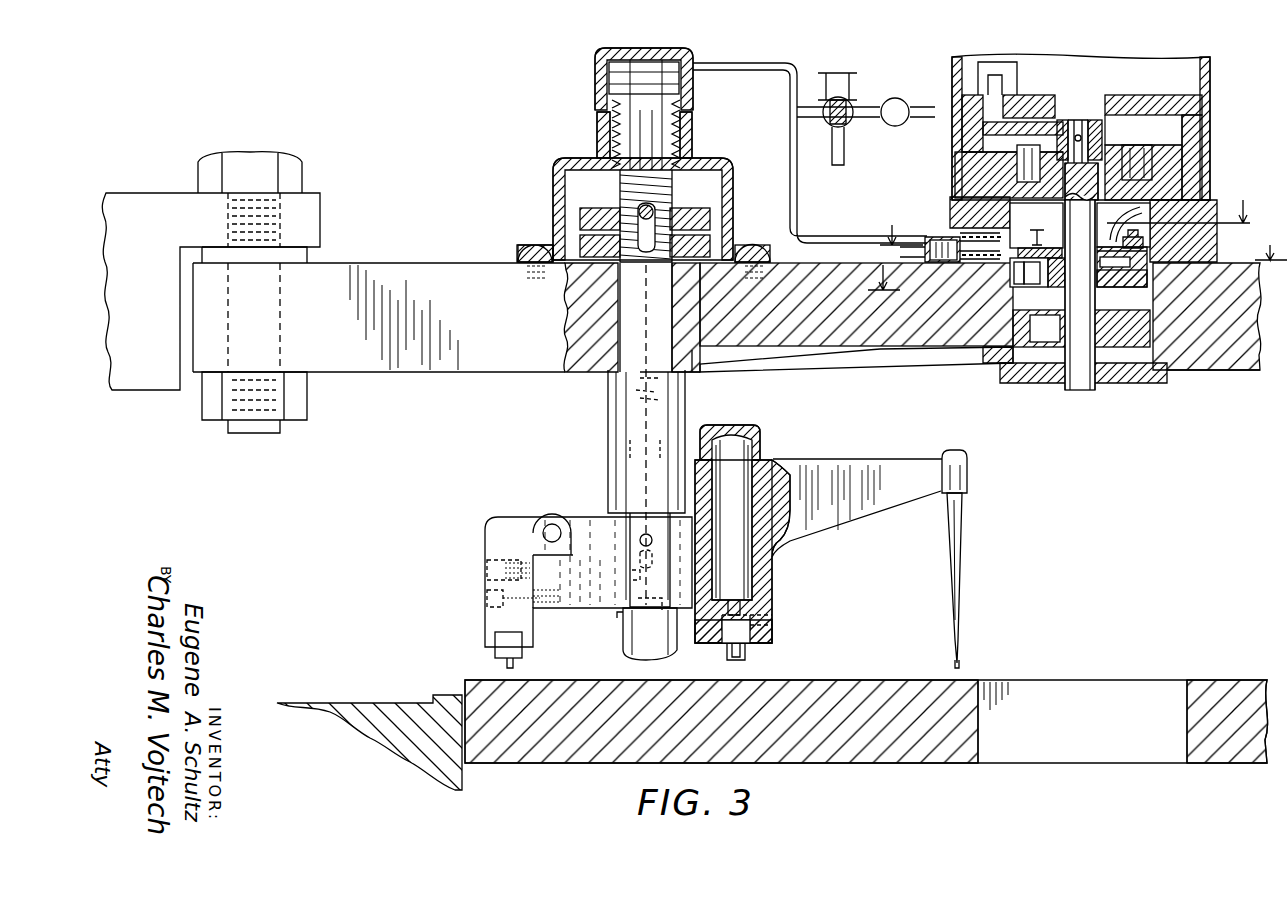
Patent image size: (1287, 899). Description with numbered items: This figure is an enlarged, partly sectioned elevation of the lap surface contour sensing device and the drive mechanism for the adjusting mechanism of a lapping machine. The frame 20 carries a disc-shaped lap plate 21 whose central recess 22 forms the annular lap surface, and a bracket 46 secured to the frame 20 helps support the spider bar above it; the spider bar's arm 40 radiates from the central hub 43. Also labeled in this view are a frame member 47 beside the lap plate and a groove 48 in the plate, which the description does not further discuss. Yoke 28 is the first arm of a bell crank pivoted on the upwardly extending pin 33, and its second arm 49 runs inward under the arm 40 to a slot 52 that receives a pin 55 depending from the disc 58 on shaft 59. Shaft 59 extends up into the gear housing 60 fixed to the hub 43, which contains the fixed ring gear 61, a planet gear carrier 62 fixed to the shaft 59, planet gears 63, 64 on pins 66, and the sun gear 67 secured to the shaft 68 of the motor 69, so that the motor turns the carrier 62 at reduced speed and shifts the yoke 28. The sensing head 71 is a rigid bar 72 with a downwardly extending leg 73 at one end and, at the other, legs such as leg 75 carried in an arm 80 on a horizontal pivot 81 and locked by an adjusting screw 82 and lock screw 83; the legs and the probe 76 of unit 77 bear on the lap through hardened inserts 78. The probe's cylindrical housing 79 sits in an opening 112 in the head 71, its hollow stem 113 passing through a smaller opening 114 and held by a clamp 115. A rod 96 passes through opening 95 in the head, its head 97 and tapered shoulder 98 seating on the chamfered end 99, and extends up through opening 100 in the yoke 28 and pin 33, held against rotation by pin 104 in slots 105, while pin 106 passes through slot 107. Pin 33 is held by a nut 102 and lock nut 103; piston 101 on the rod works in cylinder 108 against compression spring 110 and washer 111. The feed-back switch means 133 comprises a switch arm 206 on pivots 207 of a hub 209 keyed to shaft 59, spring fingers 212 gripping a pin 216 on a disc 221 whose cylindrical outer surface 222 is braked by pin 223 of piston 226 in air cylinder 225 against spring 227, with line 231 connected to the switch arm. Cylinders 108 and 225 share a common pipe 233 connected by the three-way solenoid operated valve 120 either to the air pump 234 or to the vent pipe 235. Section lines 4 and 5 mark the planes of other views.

The frame 20 is at (150, 378).
The lap plate 21 is at (557, 773).
The central recess 22 is at (1015, 715).
The yoke 28 is at (608, 414).
The pin 33 is at (635, 305).
The arm 40 is at (392, 365).
The hub 43 is at (948, 230).
The bracket 46 is at (302, 185).
The frame member 47 is at (462, 690).
The groove 48 is at (988, 680).
The second arm 49 is at (864, 370).
The slot 52 is at (1035, 383).
The pin 55 is at (998, 365).
The disc 58 is at (1030, 336).
The shaft 59 is at (1085, 395).
The gear housing 60 is at (955, 162).
The ring gear 61 is at (1185, 168).
The planet gear carrier 62 is at (1000, 177).
The planet gear 63 is at (1045, 122).
The planet gear 64 is at (1190, 140).
The pin 66 is at (1028, 145).
The sun gear 67 is at (1105, 152).
The shaft 68 is at (1085, 120).
The motor 69 is at (1205, 73).
The head 71 is at (818, 455).
The bar 72 is at (832, 520).
The leg 73 is at (962, 568).
The leg 75 is at (516, 665).
The probe 76 is at (772, 650).
The unit 77 is at (775, 575).
The insert 78 is at (505, 666).
The cylindrical housing 79 is at (742, 428).
The arm 80 is at (492, 528).
The pivot 81 is at (553, 525).
The adjusting screw 82 is at (487, 566).
The lock screw 83 is at (500, 600).
The opening 95 is at (632, 574).
The rod 96 is at (632, 447).
The head 97 is at (623, 640).
The tapered shoulder 98 is at (628, 600).
The chamfered end 99 is at (624, 622).
The opening 100 is at (640, 392).
The piston 101 is at (607, 95).
The nut 102 is at (700, 245).
The lock nut 103 is at (728, 215).
The pin 104 is at (636, 208).
The slot 105 is at (585, 218).
The pin 106 is at (640, 542).
The slot 107 is at (640, 558).
The cylinder 108 is at (612, 66).
The compression spring 110 is at (598, 122).
The washer 111 is at (597, 150).
The opening 112 is at (755, 527).
The hollow stem 113 is at (730, 655).
The opening 114 is at (730, 608).
The clamp 115 is at (760, 628).
The three-way solenoid operated valve 120 is at (855, 91).
The feed-back switch means 133 is at (1150, 266).
The switch arm 206 is at (1153, 280).
The pivot 207 is at (1150, 293).
The hub 209 is at (1052, 282).
The spring finger 212 is at (1032, 282).
The pin 216 is at (1012, 280).
The disc 221 is at (1144, 243).
The cylindrical outer surface 222 is at (1013, 258).
The pin 223 is at (1000, 251).
The air cylinder 225 is at (940, 240).
The piston 226 is at (966, 233).
The spring 227 is at (968, 240).
The line 231 is at (1160, 210).
The pipe 233 is at (797, 205).
The air pump 234 is at (903, 100).
The vent pipe 235 is at (845, 150).
The section line 4- 4 is at (1066, 216).
The section line 5- 5 is at (1070, 262).